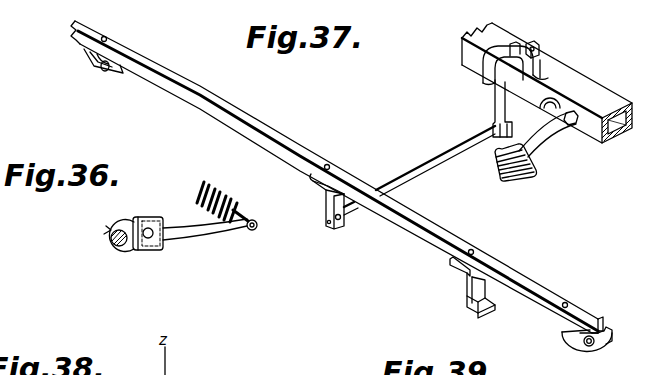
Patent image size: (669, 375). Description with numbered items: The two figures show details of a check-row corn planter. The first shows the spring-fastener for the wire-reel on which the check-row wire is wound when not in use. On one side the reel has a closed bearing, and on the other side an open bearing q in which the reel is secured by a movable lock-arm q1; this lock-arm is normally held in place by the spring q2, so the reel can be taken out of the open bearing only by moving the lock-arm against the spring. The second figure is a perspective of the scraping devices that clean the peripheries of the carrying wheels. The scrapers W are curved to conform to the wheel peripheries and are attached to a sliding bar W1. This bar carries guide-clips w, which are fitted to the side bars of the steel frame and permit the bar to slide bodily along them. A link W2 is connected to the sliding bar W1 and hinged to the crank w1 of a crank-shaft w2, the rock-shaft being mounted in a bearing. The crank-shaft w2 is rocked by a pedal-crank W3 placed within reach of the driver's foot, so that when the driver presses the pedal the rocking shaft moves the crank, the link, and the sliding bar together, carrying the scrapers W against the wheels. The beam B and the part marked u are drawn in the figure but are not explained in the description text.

In FIG. 37, the sliding bar W1 is at (267, 129).
In FIG. 37, the scraper W is at (101, 69).
In FIG. 37, the link W2 is at (450, 156).
In FIG. 37, the pedal-crank W3 is at (536, 146).
In FIG. 37, the frame beam B is at (600, 72).
In FIG. 37, the guide-clip w is at (475, 295).
In FIG. 37, the crank w1 is at (492, 108).
In FIG. 37, the crank-shaft w2 is at (527, 67).
In FIG. 37, the pivot pin u is at (537, 110).
In FIG. 36, the open bearing q is at (116, 254).
In FIG. 36, the lock-arm q1 is at (177, 229).
In FIG. 36, the spring q2 is at (214, 189).